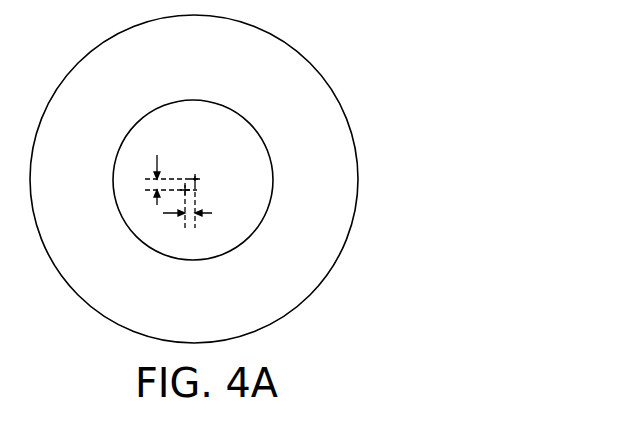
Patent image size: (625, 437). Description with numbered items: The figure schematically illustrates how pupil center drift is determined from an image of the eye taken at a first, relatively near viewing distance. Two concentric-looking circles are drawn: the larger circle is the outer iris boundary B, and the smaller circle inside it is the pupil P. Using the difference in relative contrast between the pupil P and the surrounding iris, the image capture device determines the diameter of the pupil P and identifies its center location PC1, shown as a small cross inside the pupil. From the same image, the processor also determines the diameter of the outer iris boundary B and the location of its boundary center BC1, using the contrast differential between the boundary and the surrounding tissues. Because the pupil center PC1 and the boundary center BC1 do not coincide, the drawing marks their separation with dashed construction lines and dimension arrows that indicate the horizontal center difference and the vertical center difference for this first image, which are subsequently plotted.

The outer iris boundary B is at (272, 33).
The pupil P is at (263, 140).
The pupil center location PC1 is at (197, 178).
The outer iris boundary center BC1 is at (185, 190).